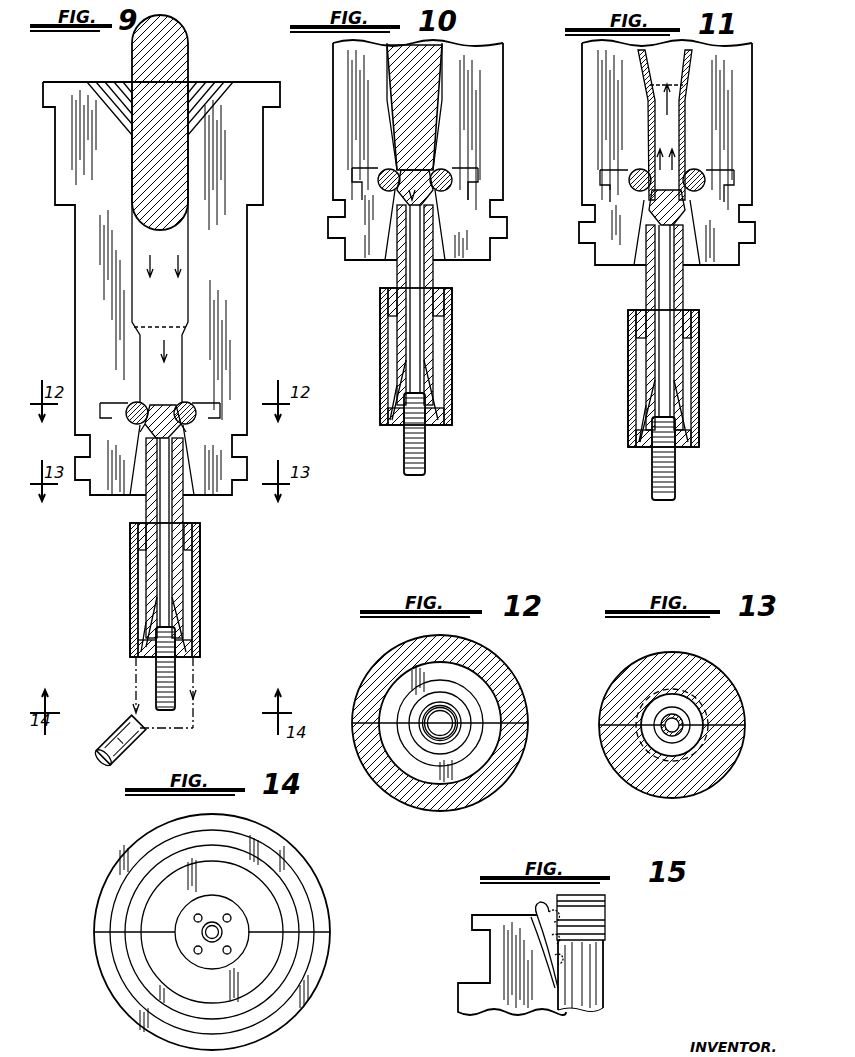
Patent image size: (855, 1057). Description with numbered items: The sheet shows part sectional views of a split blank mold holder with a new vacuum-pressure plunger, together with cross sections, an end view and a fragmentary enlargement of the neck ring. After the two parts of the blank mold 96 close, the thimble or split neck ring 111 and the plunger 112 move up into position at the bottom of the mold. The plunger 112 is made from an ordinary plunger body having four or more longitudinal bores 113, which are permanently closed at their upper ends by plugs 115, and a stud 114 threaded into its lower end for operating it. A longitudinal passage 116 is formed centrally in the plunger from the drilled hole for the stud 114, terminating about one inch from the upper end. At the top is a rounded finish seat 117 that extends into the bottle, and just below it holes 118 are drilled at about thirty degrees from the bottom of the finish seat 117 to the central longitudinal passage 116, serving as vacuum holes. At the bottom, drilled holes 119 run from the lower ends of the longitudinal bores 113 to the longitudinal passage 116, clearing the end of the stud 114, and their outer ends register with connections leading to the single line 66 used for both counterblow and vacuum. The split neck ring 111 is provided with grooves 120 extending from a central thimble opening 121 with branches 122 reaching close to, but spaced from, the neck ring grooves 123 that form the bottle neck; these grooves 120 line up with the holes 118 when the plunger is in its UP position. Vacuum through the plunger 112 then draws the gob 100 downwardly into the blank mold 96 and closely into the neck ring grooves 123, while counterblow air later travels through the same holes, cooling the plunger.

In FIG. 9, the single line 66 is at (117, 733).
In FIG. 9, the blank mold 96 is at (236, 300).
In FIG. 10, the blank mold 96 is at (338, 132).
In FIG. 11, the blank mold 96 is at (596, 145).
In FIG. 12, the blank mold 96 is at (506, 760).
In FIG. 14, the blank mold 96 is at (113, 975).
In FIG. 9, the gob 100 is at (142, 178).
In FIG. 10, the gob 100 is at (422, 96).
In FIG. 9, the thimble or split neck ring 111 is at (226, 497).
In FIG. 10, the thimble or split neck ring 111 is at (365, 262).
In FIG. 11, the thimble or split neck ring 111 is at (724, 252).
In FIG. 12, the thimble or split neck ring 111 is at (410, 762).
In FIG. 13, the thimble or split neck ring 111 is at (626, 760).
In FIG. 14, the thimble or split neck ring 111 is at (284, 920).
In FIG. 15, the thimble or split neck ring 111 is at (492, 1002).
In FIG. 9, the plunger 112 is at (200, 560).
In FIG. 10, the plunger 112 is at (452, 398).
In FIG. 11, the plunger 112 is at (690, 366).
In FIG. 12, the plunger 112 is at (442, 728).
In FIG. 13, the plunger 112 is at (662, 745).
In FIG. 14, the plunger 112 is at (238, 922).
In FIG. 9, the longitudinal bores 113 is at (200, 582).
In FIG. 14, the longitudinal bores 113 is at (197, 953).
In FIG. 9, the stud 114 is at (157, 675).
In FIG. 11, the stud 114 is at (655, 472).
In FIG. 14, the stud 114 is at (213, 926).
In FIG. 9, the plugs 115 is at (200, 542).
In FIG. 9, the longitudinal passage 116 is at (146, 590).
In FIG. 10, the longitudinal passage 116 is at (417, 278).
In FIG. 11, the longitudinal passage 116 is at (665, 298).
In FIG. 13, the longitudinal passage 116 is at (690, 741).
In FIG. 9, the finish seat 117 is at (163, 404).
In FIG. 11, the finish seat 117 is at (675, 205).
In FIG. 9, the holes 118 is at (183, 430).
In FIG. 10, the holes 118 is at (432, 205).
In FIG. 11, the holes 118 is at (652, 222).
In FIG. 9, the drilled holes 119 is at (190, 637).
In FIG. 10, the drilled holes 119 is at (395, 402).
In FIG. 9, the grooves 120 is at (196, 409).
In FIG. 15, the grooves 120 is at (536, 938).
In FIG. 9, the central thimble opening 121 is at (188, 470).
In FIG. 11, the central thimble opening 121 is at (625, 265).
In FIG. 15, the central thimble opening 121 is at (586, 990).
In FIG. 15, the branches 122 is at (560, 957).
In FIG. 15, the neck ring grooves 123 is at (605, 928).